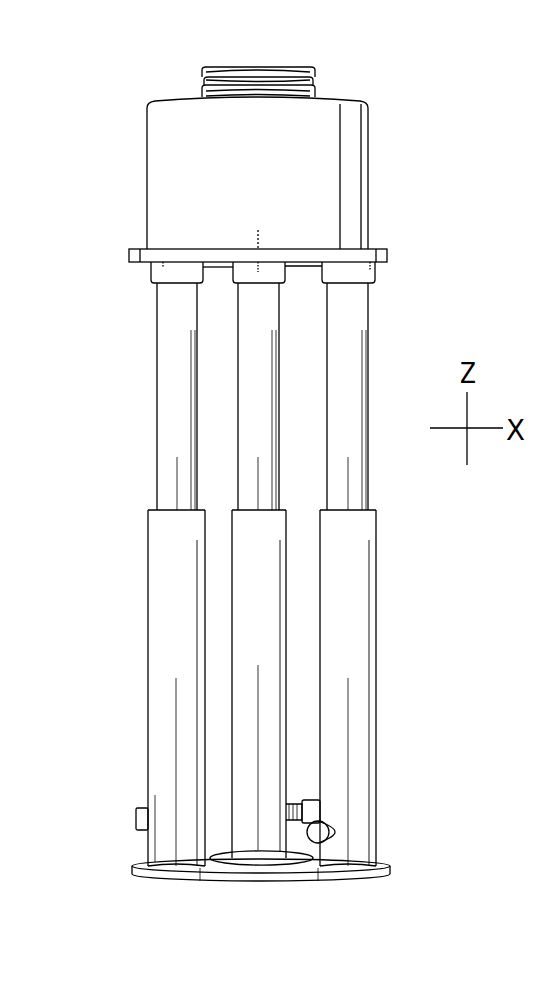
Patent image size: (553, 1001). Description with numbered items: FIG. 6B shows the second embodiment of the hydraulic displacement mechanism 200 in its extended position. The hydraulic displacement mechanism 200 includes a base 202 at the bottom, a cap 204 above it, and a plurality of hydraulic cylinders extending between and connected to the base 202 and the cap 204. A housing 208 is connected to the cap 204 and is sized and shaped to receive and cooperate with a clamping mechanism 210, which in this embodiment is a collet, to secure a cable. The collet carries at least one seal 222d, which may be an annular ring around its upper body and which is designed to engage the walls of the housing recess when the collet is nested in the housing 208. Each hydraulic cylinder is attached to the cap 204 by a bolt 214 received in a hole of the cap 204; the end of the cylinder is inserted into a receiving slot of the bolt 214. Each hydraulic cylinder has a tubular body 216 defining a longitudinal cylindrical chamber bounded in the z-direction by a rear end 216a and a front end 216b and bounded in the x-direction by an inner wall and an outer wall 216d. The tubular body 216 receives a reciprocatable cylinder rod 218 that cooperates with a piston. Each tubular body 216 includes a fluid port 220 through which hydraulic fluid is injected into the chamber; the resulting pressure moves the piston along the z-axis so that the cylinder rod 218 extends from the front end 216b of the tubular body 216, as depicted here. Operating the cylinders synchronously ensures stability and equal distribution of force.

The hydraulic displacement mechanism 200 is at (436, 54).
The base 202 is at (340, 880).
The cap 204 is at (387, 256).
The housing 208 is at (368, 185).
The clamping mechanism 210 is at (228, 70).
The bolt 214 is at (151, 272).
The tubular body 216 is at (376, 656).
The rear end 216a is at (367, 862).
The front end 216b is at (150, 510).
The outer wall 216d is at (149, 678).
The cylinder rod 218 is at (157, 385).
The fluid port 220 is at (136, 819).
The seal 222d is at (320, 83).